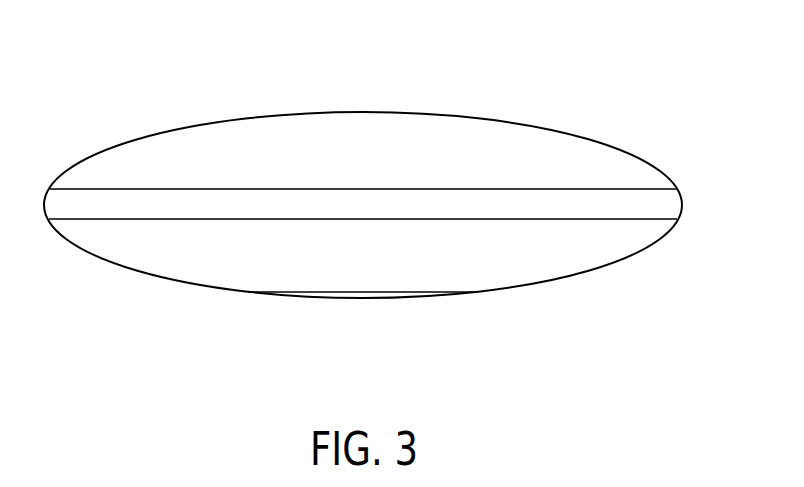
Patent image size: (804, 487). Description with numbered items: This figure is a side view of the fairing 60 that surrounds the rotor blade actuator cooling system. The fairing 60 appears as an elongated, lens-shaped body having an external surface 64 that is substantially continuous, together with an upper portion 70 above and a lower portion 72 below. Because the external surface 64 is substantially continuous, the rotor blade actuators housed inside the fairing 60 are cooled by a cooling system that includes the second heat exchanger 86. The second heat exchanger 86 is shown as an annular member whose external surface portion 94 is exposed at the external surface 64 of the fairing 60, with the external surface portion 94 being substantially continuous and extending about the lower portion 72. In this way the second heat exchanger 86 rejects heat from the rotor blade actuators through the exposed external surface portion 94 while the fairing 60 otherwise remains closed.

The fairing 60 is at (120, 122).
The upper portion 70 is at (198, 70).
The external surface 64 is at (490, 118).
The lower portion 72 is at (125, 313).
The external surface portion 94 is at (343, 293).
The second heat exchanger 86 is at (455, 318).